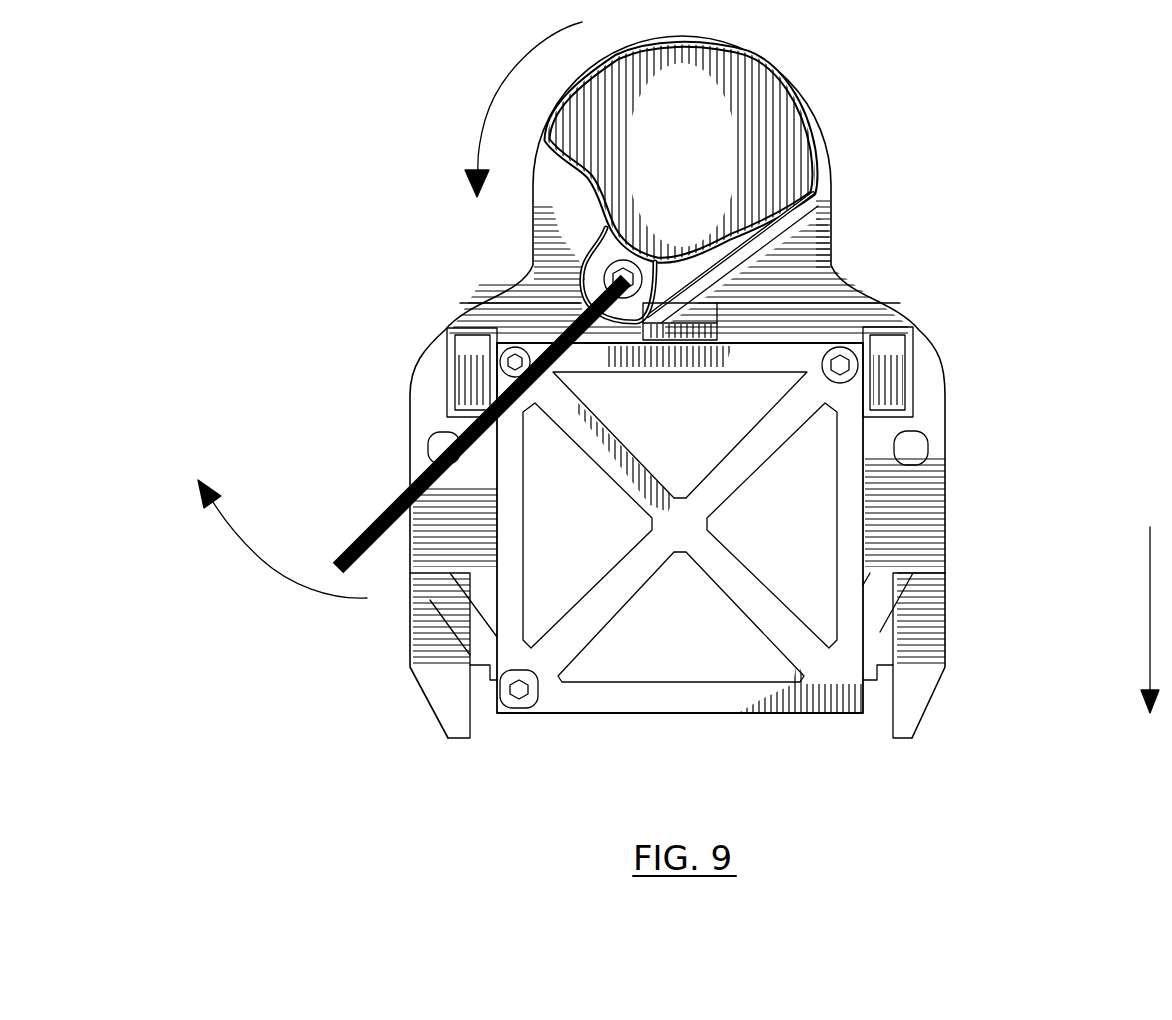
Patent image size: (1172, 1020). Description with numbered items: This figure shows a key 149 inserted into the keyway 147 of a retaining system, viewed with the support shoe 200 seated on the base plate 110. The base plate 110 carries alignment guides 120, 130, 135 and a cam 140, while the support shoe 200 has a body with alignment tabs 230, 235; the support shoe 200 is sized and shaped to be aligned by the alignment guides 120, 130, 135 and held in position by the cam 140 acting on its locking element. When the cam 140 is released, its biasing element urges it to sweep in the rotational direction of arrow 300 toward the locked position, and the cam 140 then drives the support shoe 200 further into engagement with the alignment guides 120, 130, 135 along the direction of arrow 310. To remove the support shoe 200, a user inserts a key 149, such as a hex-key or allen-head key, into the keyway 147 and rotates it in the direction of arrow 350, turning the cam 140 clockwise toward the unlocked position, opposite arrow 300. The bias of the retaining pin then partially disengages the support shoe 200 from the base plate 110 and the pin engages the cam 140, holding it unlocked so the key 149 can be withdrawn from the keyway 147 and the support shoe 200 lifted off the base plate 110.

The base plate 110 is at (935, 393).
The alignment guide 120 is at (455, 335).
The alignment guide 130 is at (423, 603).
The alignment guide 135 is at (935, 598).
The cam 140 is at (662, 281).
The keyway 147 is at (592, 274).
The key 149 is at (373, 515).
The support shoe 200 is at (850, 512).
The alignment tab 230 is at (425, 638).
The alignment tab 235 is at (885, 582).
The arrow 300 is at (506, 109).
The arrow 310 is at (1123, 620).
The arrow 350 is at (277, 539).